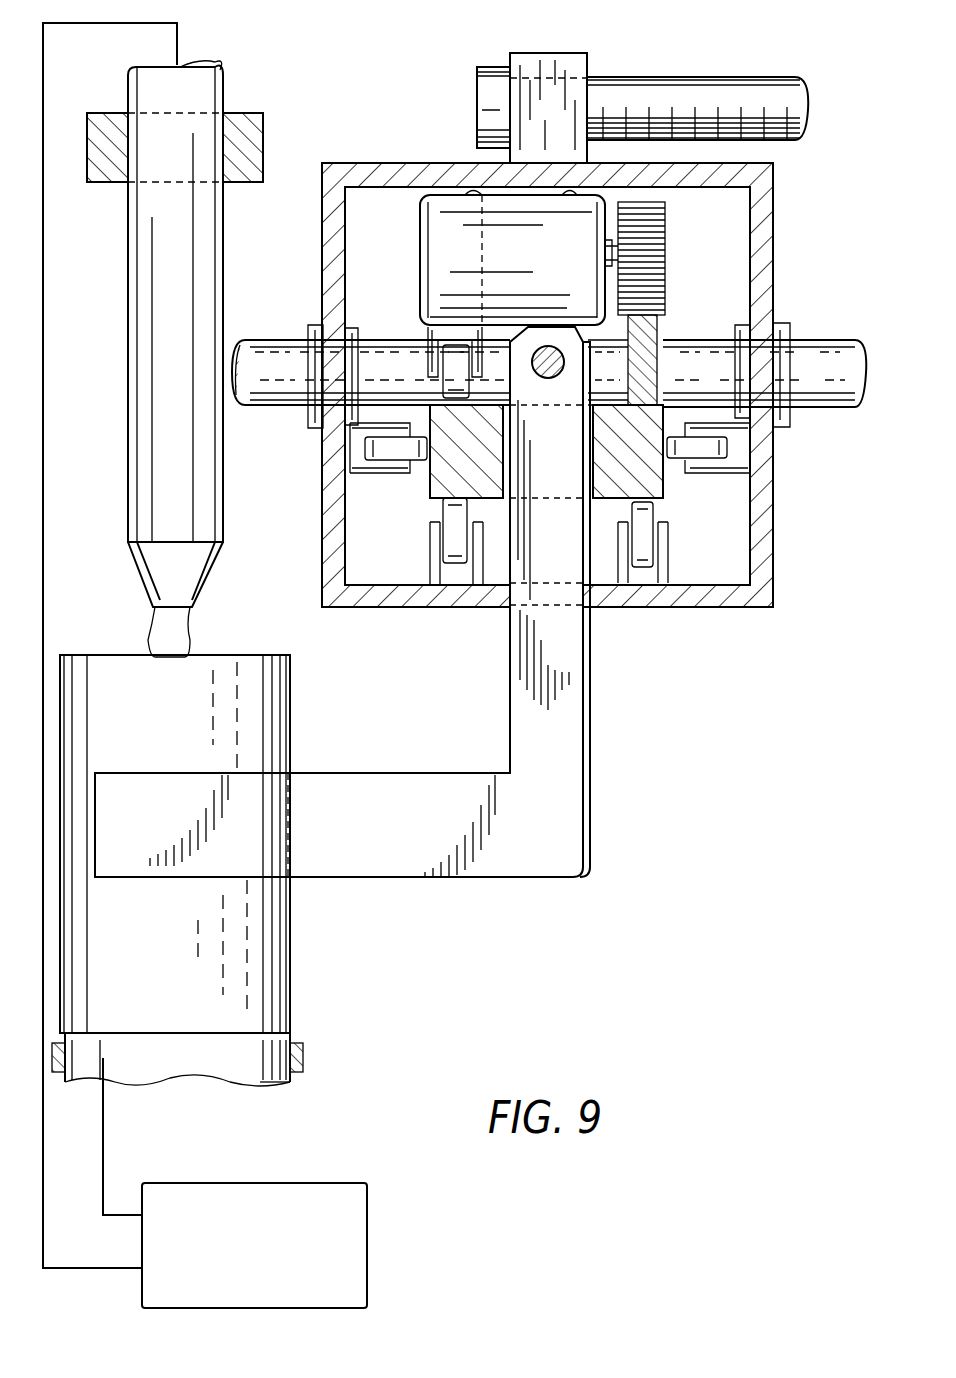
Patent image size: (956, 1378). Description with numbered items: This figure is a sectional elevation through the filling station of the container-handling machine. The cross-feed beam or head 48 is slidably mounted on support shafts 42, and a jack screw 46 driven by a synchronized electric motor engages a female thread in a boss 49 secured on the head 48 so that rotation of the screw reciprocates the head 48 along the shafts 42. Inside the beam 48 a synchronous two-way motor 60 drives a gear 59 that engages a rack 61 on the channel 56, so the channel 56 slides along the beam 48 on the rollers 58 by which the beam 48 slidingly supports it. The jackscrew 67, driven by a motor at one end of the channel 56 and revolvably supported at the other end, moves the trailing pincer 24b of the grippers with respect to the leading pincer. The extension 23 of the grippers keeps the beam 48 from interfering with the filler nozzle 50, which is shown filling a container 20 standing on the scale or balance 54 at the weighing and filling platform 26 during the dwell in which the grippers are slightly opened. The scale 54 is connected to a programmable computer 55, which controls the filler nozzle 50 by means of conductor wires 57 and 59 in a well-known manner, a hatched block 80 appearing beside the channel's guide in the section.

The container 20 is at (80, 657).
The extension 23 is at (315, 880).
The trailing pincer 24b is at (573, 750).
The weighing and filling platform 26 is at (303, 1058).
The support shafts 42 is at (820, 407).
The jack screw 46 is at (790, 143).
The cross-feed beam or head 48 is at (410, 163).
The boss 49 is at (518, 63).
The filling nozzle 50 is at (128, 320).
The scale 54 is at (268, 1082).
The programmable computer 55 is at (339, 1190).
The channel 56 is at (436, 478).
The conductor wires 57 is at (108, 1180).
The rollers 58 is at (440, 390).
The gear 59 is at (43, 436).
The synchronous two-way motor 60 is at (538, 260).
The rack 61 is at (655, 335).
The jackscrew 67 is at (552, 378).
The bearing block 80 is at (573, 467).